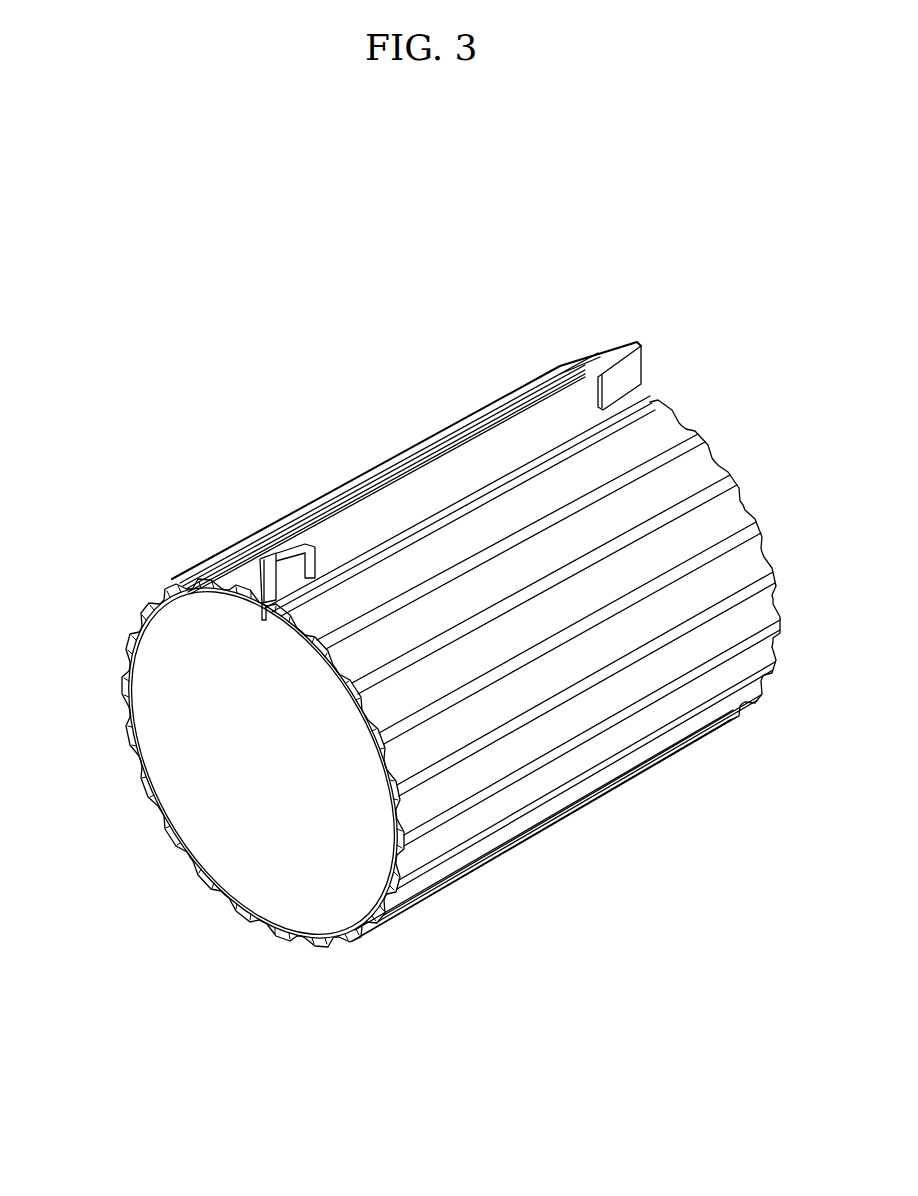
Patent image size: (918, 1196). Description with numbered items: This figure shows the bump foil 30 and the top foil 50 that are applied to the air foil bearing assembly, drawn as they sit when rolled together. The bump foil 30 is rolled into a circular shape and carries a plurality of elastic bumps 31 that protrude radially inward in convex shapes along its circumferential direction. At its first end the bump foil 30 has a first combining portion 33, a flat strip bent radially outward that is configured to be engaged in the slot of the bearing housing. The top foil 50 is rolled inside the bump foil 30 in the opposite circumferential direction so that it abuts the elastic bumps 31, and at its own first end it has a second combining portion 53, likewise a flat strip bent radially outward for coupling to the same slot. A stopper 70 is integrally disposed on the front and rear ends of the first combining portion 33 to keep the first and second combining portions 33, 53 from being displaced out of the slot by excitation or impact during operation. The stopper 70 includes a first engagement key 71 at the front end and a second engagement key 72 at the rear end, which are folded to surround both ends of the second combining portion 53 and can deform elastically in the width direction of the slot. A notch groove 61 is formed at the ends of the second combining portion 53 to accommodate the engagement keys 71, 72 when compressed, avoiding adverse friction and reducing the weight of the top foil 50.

The bump foil 30 is at (317, 951).
The elastic bumps 31 is at (360, 932).
The first combining portion 33 is at (447, 428).
The top foil 50 is at (256, 624).
The second combining portion 53 is at (376, 518).
The notch groove 61 is at (292, 552).
The stopper 70 is at (420, 577).
The first engagement key 71 is at (288, 572).
The second engagement key 72 is at (618, 387).